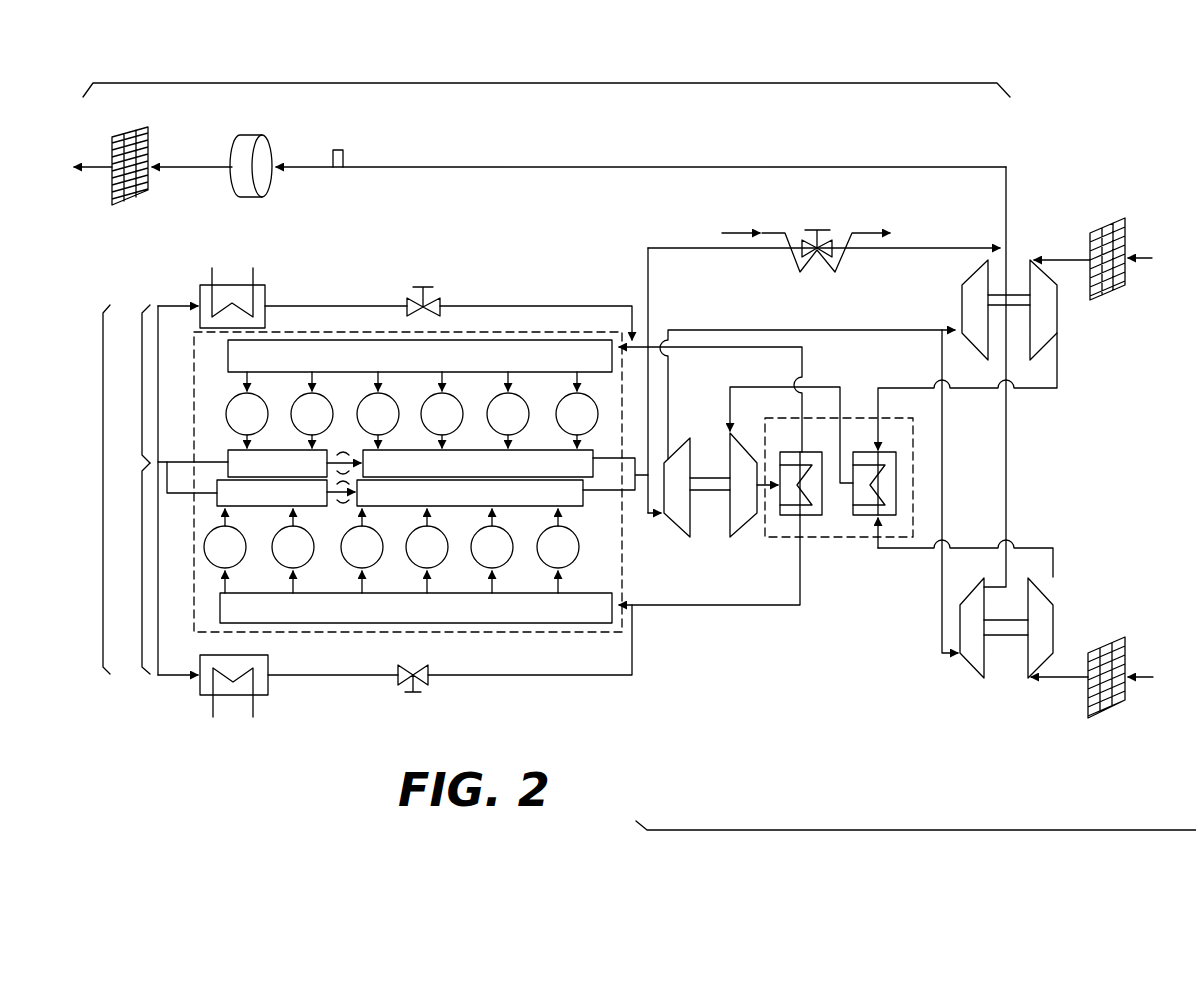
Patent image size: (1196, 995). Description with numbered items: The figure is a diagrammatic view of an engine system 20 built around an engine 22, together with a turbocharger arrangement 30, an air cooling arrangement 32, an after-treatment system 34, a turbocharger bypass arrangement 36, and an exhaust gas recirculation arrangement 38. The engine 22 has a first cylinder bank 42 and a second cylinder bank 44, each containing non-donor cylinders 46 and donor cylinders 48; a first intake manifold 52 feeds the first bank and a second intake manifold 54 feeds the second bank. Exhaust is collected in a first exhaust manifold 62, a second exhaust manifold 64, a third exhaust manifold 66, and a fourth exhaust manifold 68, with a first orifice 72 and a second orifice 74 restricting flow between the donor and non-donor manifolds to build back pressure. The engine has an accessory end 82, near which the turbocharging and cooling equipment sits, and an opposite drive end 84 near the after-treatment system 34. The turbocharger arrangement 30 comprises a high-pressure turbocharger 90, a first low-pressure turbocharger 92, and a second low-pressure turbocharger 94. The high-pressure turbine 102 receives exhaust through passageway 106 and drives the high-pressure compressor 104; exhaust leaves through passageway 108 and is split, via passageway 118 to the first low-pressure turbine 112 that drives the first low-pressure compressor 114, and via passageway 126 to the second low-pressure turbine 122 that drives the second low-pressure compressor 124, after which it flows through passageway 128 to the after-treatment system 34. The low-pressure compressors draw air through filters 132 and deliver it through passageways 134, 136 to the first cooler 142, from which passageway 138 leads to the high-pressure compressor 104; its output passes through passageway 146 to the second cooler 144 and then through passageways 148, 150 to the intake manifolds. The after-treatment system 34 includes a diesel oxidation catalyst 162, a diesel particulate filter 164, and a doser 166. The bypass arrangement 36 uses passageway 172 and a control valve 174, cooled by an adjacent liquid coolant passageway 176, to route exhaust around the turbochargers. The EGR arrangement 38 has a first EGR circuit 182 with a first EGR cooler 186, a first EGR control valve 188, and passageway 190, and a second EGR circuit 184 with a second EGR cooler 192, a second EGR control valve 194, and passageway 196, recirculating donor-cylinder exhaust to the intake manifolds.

The engine system 20 is at (1080, 80).
The engine 22 is at (224, 367).
The turbocharger arrangement 30 is at (978, 832).
The air cooling arrangement 32 is at (796, 445).
The after-treatment system 34 is at (544, 82).
The turbocharger bypass arrangement 36 is at (640, 243).
The exhaust gas recirculation arrangement 38 is at (101, 520).
The first cylinder bank 42 is at (194, 376).
The second cylinder bank 44 is at (194, 561).
The non-donor cylinders 46 is at (389, 424).
The donor cylinders 48 is at (258, 424).
The first intake manifold 52 is at (433, 365).
The second intake manifold 54 is at (428, 617).
The first exhaust manifold 62 is at (411, 473).
The second exhaust manifold 64 is at (288, 473).
The third exhaust manifold 66 is at (411, 502).
The fourth exhaust manifold 68 is at (288, 502).
The first orifice 72 is at (345, 449).
The second orifice 74 is at (344, 507).
The accessory end 82 is at (752, 640).
The drive end 84 is at (92, 648).
The high-pressure turbocharger 90 is at (710, 540).
The first low-pressure turbocharger 92 is at (1068, 333).
The second low-pressure turbocharger 94 is at (1008, 697).
The high-pressure turbine 102 is at (676, 523).
The high-pressure compressor 104 is at (752, 523).
The passageway 106 is at (644, 492).
The passageway 108 is at (770, 328).
The first low-pressure turbine 112 is at (974, 350).
The first low-pressure compressor 114 is at (1046, 350).
The passageway 118 is at (955, 328).
The second low-pressure turbine 122 is at (976, 676).
The second low-pressure compressor 124 is at (1056, 620).
The passageway 126 is at (940, 588).
The passageway 128 is at (1008, 195).
The filters 132 is at (1124, 228).
The passageway 134 is at (898, 387).
The passageway 136 is at (900, 550).
The passageway 138 is at (728, 398).
The first cooler 142 is at (898, 465).
The second cooler 144 is at (814, 518).
The passageway 146 is at (764, 494).
The passageway 148 is at (700, 350).
The passageway 150 is at (698, 604).
The diesel oxidation catalyst 162 is at (265, 135).
The diesel particulate filter 164 is at (150, 130).
The doser 166 is at (340, 150).
The passageway 172 is at (646, 275).
The control valve 174 is at (820, 228).
The liquid coolant passageway 176 is at (862, 230).
The first EGR circuit 182 is at (142, 392).
The second EGR circuit 184 is at (142, 579).
The first EGR cooler 186 is at (236, 283).
The first EGR control valve 188 is at (430, 286).
The passageway 190 is at (340, 305).
The second EGR cooler 192 is at (236, 705).
The second EGR control valve 194 is at (406, 696).
The passageway 196 is at (542, 676).